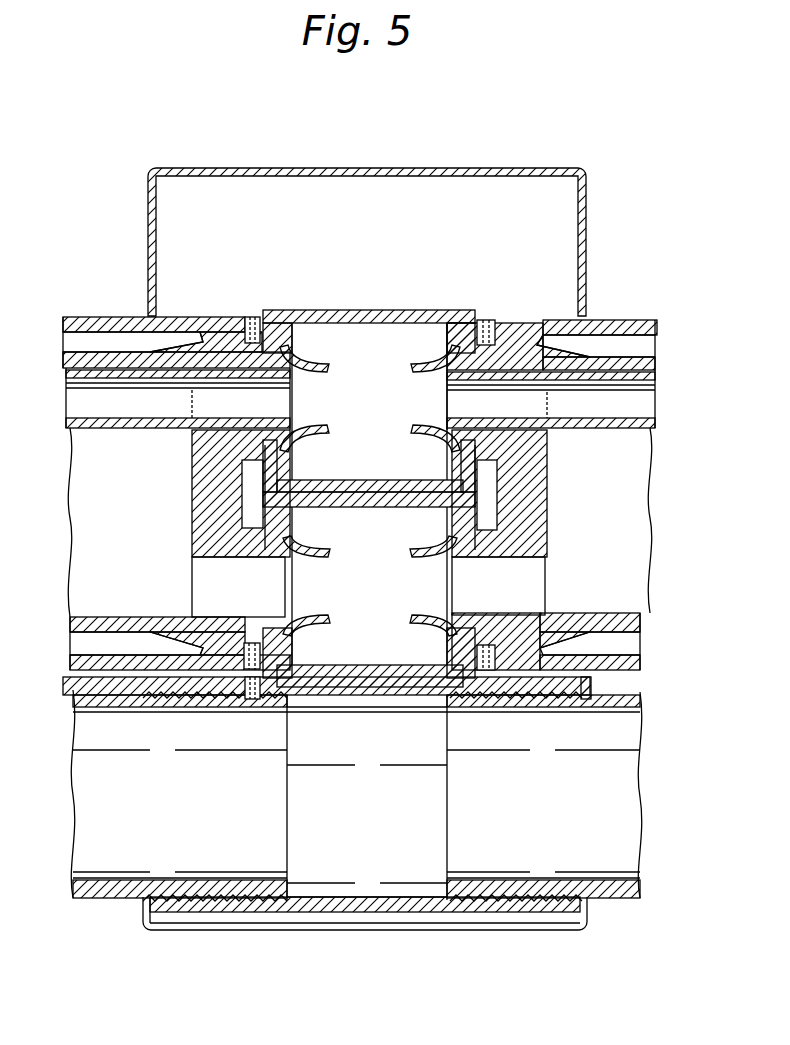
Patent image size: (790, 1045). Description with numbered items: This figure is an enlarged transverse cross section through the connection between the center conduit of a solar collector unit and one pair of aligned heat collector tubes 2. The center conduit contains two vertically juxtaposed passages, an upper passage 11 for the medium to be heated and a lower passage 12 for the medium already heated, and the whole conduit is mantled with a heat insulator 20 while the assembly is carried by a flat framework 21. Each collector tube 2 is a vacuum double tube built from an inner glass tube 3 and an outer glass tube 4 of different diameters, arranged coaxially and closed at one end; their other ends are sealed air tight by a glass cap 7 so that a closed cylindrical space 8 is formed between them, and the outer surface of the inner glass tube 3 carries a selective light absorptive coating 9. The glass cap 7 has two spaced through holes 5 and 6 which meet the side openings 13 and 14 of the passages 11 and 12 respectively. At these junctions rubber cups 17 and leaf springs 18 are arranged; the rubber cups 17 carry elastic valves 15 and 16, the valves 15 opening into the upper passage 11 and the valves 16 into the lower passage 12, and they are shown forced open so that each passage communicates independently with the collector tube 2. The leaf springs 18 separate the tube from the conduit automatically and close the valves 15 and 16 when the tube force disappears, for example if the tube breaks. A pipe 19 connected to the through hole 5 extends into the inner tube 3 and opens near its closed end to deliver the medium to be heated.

The collector tube 2 is at (88, 314).
The inner glass tube 3 is at (592, 350).
The outer glass tube 4 is at (630, 320).
The through hole 5 is at (195, 440).
The through hole 6 is at (205, 586).
The glass cap 7 is at (197, 498).
The closed cylindrical space 8 is at (640, 347).
The selective light absorptive coating 9 is at (160, 700).
The upper passage 11 is at (335, 335).
The lower passage 12 is at (375, 630).
The side opening 13 is at (443, 351).
The side opening 14 is at (292, 640).
The elastic valve 15 is at (418, 394).
The elastic valve 16 is at (312, 578).
The rubber cup 17 is at (455, 475).
The leaf spring 18 is at (245, 325).
The pipe 19 is at (82, 400).
The heat insulator 20 is at (548, 216).
The flat framework 21 is at (76, 882).